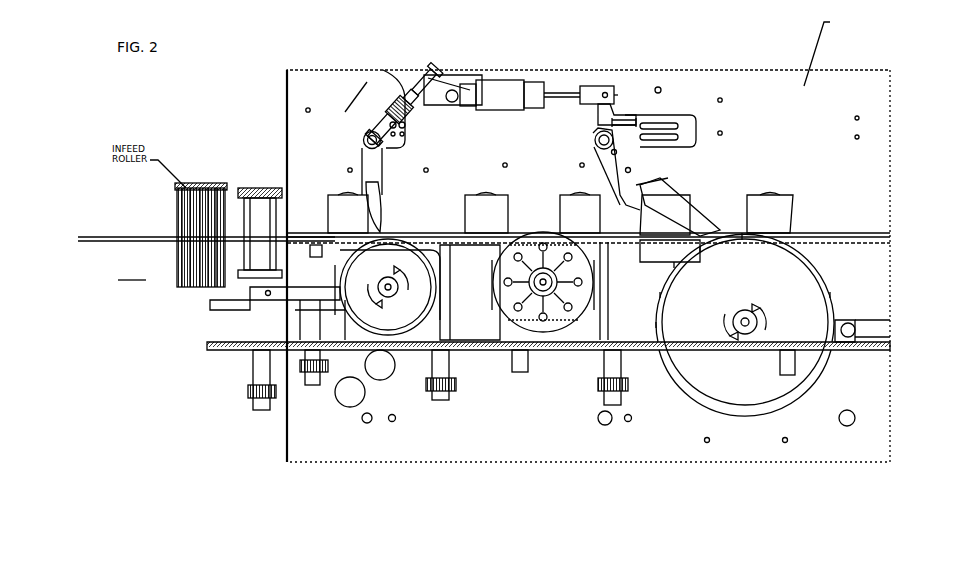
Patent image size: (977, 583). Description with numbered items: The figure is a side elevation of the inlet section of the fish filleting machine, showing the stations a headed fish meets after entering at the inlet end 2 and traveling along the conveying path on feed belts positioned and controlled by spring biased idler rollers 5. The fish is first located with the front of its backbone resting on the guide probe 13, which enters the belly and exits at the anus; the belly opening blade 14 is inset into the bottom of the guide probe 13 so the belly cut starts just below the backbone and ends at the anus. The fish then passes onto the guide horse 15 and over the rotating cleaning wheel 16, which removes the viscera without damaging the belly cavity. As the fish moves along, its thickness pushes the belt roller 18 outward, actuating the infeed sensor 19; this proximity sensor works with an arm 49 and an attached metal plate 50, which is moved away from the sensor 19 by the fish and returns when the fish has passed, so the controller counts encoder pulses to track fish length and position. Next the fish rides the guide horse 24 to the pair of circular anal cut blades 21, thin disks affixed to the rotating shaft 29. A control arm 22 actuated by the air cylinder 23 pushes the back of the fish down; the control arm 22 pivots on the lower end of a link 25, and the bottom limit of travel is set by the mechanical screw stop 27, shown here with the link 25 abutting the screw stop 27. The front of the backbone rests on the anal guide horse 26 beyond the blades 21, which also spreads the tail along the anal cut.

The inlet end 2 is at (101, 289).
The spring biased idler rollers 5 is at (472, 195).
The guide probe 13 is at (130, 237).
The belly opening blade 14 is at (377, 314).
The guide horse 15 is at (467, 313).
The cleaning wheel 16 is at (547, 330).
The roller 18 is at (258, 189).
The sensor 19 is at (340, 118).
The anal cut blades 21 is at (797, 322).
The control arm 22 is at (637, 185).
The air cylinder 23 is at (505, 94).
The guide horse 24 is at (650, 255).
The link 25 is at (614, 113).
The anal guide horse 26 is at (862, 275).
The mechanical screw stop 27 is at (635, 125).
The shaft 29 is at (757, 380).
The arm 49 is at (382, 197).
The metal plate 50 is at (347, 112).